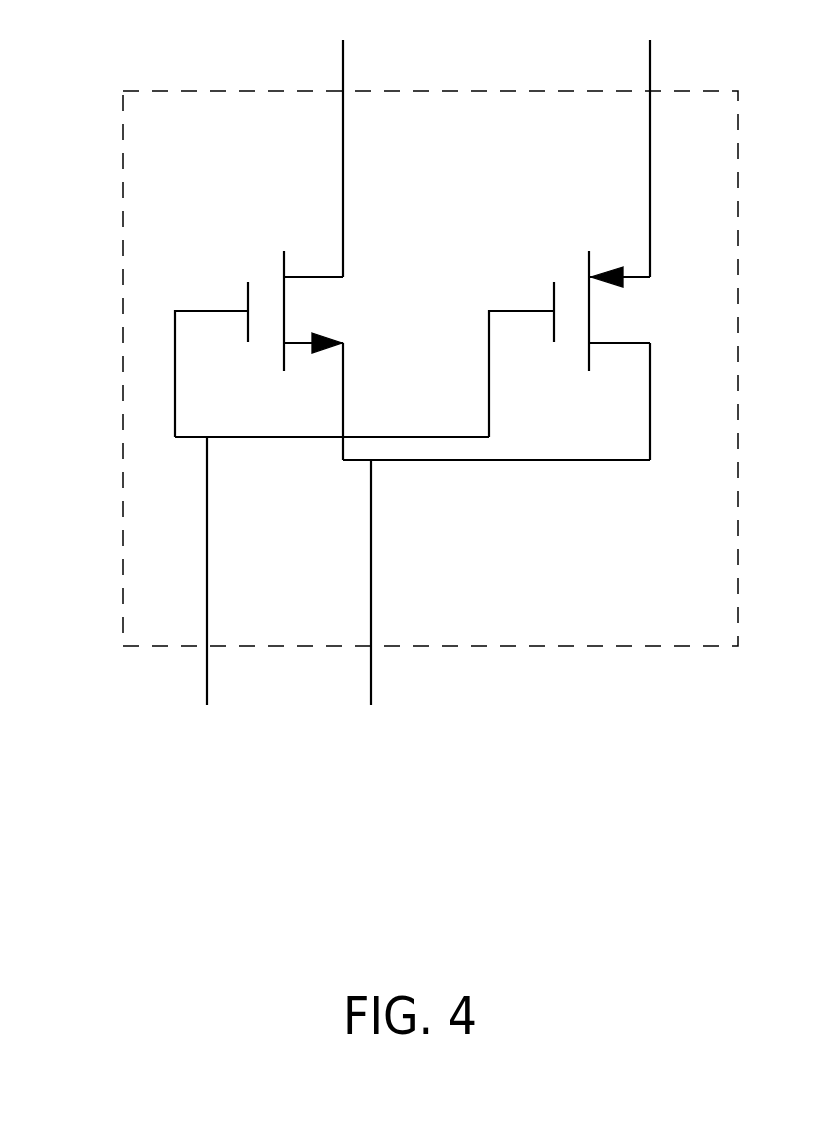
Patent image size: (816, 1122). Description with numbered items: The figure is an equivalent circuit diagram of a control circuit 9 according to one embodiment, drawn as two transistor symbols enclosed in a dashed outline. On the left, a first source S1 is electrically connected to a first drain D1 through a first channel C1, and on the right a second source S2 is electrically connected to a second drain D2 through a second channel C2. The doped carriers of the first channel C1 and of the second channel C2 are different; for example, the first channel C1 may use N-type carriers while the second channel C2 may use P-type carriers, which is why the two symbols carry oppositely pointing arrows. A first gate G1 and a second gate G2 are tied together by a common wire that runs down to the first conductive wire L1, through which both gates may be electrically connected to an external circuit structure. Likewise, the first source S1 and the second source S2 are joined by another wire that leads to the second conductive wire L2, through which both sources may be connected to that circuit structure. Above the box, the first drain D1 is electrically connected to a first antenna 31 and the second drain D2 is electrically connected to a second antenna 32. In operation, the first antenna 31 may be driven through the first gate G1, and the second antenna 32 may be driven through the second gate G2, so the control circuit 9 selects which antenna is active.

The control circuit 9 is at (123, 197).
The first antenna 31 is at (343, 52).
The second antenna 32 is at (650, 52).
The first channel C1 is at (286, 316).
The second channel C2 is at (596, 316).
The first gate G1 is at (211, 356).
The first drain D1 is at (340, 264).
The first source S1 is at (338, 396).
The second gate G2 is at (521, 356).
The second drain D2 is at (646, 267).
The second source S2 is at (644, 396).
The first conductive wire L1 is at (207, 687).
The second conductive wire L2 is at (371, 687).